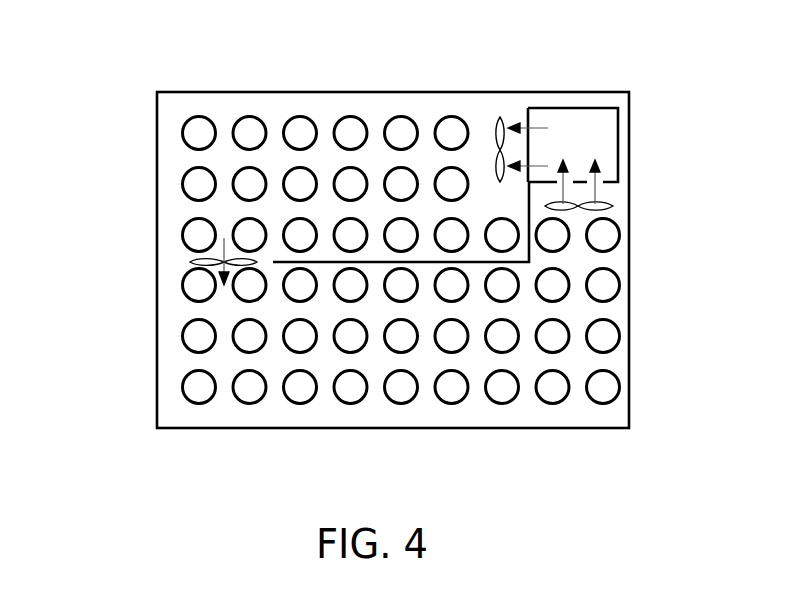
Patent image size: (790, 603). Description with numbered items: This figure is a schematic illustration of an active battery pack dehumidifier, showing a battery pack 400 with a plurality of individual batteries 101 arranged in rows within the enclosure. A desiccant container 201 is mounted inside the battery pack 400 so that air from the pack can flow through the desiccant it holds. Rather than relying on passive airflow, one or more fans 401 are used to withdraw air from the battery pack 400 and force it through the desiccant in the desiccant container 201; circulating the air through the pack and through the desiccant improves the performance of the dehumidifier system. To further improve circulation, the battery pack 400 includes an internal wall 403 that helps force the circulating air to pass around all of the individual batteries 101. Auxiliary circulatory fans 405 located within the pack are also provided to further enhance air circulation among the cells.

The battery pack 400 is at (287, 73).
The individual batteries 101 is at (401, 336).
The internal wall 403 is at (423, 263).
The desiccant container 201 is at (603, 152).
The fans 401 is at (500, 117).
The auxiliary circulatory fans 405 is at (190, 262).